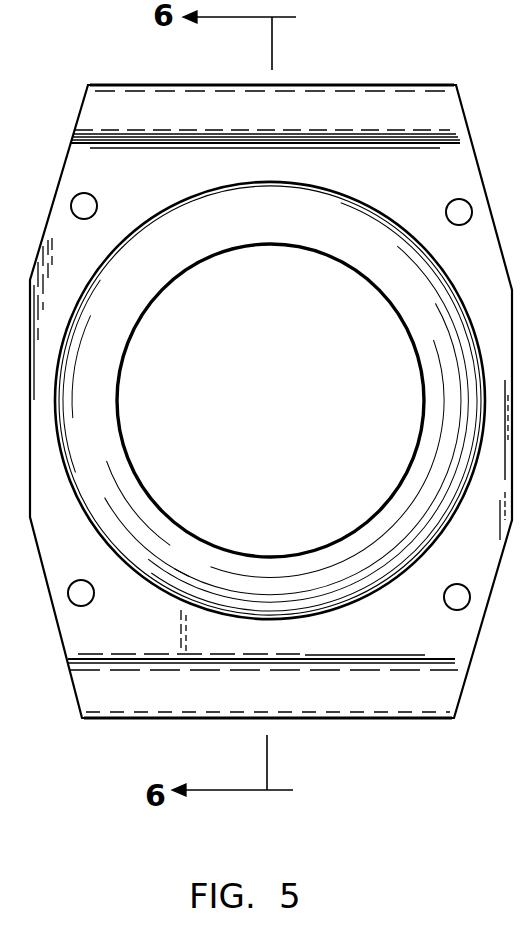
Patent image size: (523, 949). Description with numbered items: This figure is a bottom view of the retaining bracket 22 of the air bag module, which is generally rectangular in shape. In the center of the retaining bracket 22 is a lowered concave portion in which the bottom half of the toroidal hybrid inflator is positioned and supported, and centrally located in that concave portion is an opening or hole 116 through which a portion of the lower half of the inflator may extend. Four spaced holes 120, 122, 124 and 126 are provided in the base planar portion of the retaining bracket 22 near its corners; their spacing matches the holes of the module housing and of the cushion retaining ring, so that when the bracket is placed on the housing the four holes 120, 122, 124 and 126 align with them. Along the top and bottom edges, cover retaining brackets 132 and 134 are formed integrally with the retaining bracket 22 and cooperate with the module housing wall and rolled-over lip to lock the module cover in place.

The retaining bracket 22 is at (410, 68).
The opening or hole 116 is at (160, 508).
The hole 120 is at (97, 205).
The hole 122 is at (446, 209).
The hole 124 is at (90, 603).
The hole 126 is at (445, 606).
The cover retaining bracket 132 is at (104, 85).
The cover retaining bracket 134 is at (104, 720).